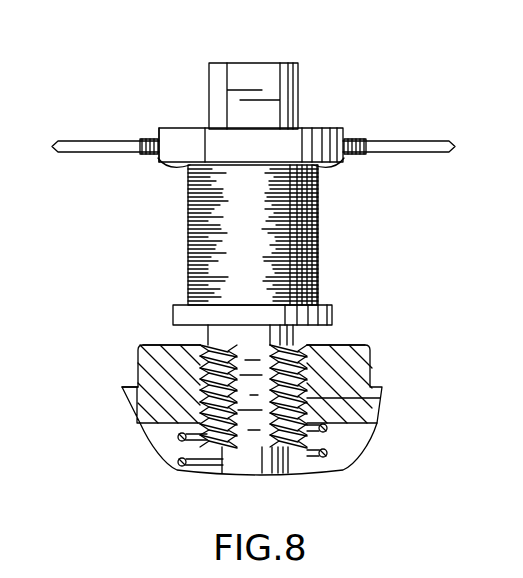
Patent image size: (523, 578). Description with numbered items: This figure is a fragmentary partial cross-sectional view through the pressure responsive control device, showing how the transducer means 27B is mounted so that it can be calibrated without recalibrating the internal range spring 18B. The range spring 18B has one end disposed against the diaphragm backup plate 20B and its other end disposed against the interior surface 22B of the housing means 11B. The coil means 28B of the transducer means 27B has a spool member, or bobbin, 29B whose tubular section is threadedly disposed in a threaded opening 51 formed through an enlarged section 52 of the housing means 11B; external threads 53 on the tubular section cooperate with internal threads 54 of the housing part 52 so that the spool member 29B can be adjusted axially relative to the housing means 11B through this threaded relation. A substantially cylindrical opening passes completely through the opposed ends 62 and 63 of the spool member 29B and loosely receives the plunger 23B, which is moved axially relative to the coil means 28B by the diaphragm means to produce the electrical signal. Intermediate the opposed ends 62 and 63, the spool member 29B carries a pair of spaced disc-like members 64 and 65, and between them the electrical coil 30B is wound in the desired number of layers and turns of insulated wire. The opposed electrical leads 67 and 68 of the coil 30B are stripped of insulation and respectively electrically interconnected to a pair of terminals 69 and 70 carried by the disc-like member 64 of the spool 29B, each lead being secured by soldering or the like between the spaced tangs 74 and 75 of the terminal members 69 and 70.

The end of spool member 62 is at (287, 63).
The spool member 29B is at (177, 128).
The disc-like member 64 is at (160, 130).
The tang 75 is at (157, 140).
The terminal 69 is at (82, 140).
The tang 74 is at (138, 152).
The electrical lead 67 is at (150, 160).
The electrical lead 68 is at (347, 158).
The terminal 70 is at (420, 142).
The electrical coil 30B is at (188, 208).
The coil means 28B is at (179, 245).
The transducer means 27B is at (355, 253).
The disc-like member 65 is at (173, 312).
The threaded opening 51 is at (325, 338).
The housing means 11B is at (372, 365).
The enlarged section of housing means 52 is at (370, 347).
The external threads 53 is at (377, 400).
The internal threads 54 is at (200, 366).
The interior surface of housing means 22B is at (143, 433).
The range spring 18B is at (167, 463).
The diaphragm backup plate 20B is at (312, 427).
The end of spool member 63 is at (240, 452).
The plunger 23B is at (285, 463).